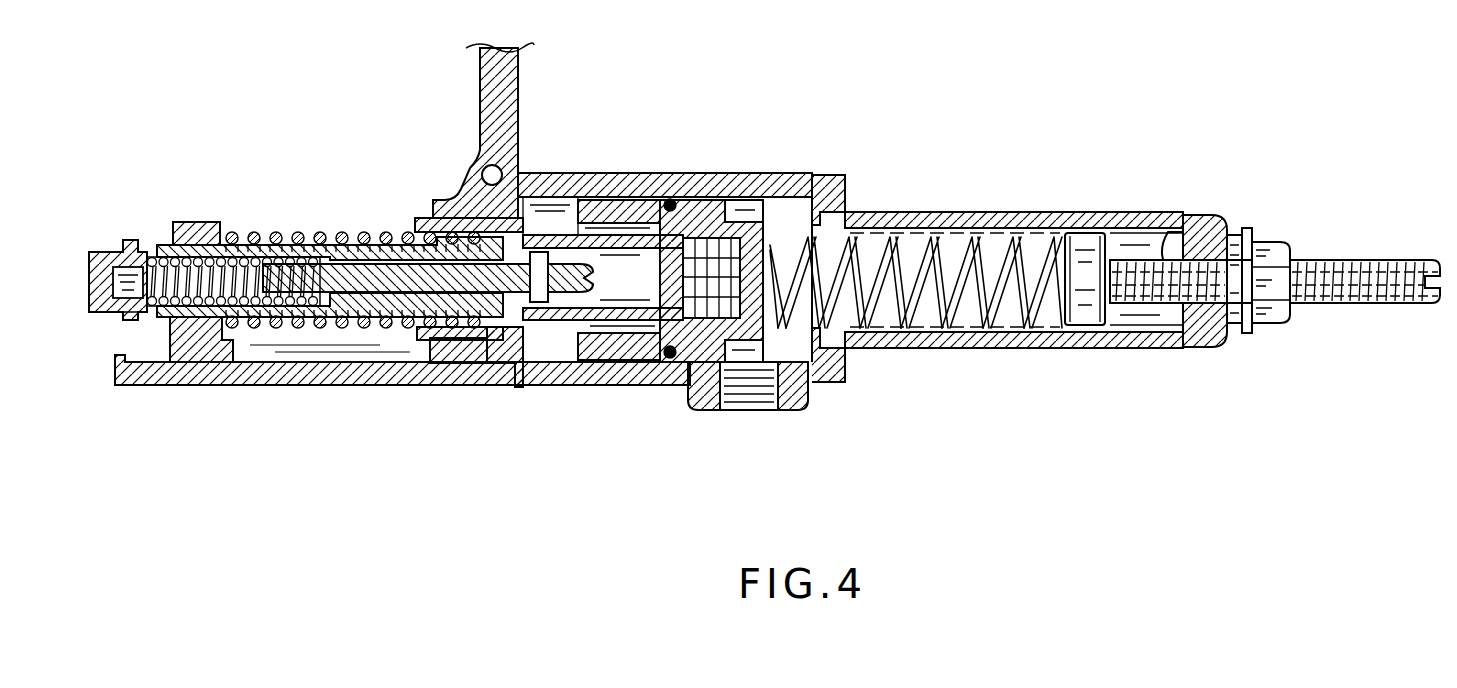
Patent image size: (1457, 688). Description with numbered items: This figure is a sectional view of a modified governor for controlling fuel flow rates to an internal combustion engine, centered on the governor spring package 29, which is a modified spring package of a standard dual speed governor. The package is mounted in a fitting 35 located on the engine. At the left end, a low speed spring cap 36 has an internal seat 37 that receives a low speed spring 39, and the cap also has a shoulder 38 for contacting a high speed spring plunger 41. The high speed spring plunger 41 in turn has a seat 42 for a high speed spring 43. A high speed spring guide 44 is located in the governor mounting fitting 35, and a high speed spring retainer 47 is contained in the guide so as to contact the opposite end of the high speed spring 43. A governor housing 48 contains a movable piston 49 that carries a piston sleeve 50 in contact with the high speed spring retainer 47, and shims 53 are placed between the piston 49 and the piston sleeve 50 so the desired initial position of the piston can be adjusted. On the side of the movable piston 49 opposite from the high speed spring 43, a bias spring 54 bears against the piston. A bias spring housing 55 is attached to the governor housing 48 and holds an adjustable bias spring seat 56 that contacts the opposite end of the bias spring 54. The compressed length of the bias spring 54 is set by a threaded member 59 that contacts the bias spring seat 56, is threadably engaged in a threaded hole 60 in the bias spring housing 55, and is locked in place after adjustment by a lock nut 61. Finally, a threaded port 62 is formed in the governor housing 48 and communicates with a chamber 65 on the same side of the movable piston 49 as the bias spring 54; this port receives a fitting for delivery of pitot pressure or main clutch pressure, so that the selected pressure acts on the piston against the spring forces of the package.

The governor spring package 29 is at (854, 163).
The fitting 35 is at (290, 380).
The low speed spring cap 36 is at (116, 252).
The internal seat 37 is at (152, 258).
The shoulder 38 is at (126, 318).
The low speed spring 39 is at (160, 245).
The high speed spring plunger 41 is at (170, 322).
The seat 42 is at (230, 234).
The high speed spring 43 is at (305, 232).
The high speed spring guide 44 is at (446, 364).
The high speed spring retainer 47 is at (494, 330).
The governor housing 48 is at (575, 176).
The movable piston 49 is at (618, 205).
The piston sleeve 50 is at (612, 322).
The shims 53 is at (700, 305).
The bias spring 54 is at (940, 325).
The bias spring housing 55 is at (870, 213).
The adjustable bias spring seat 56 is at (1078, 250).
The threaded member 59 is at (1412, 305).
The threaded hole 60 is at (1170, 240).
The lock nut 61 is at (1282, 325).
The threaded port 62 is at (773, 396).
The chamber 65 is at (738, 208).